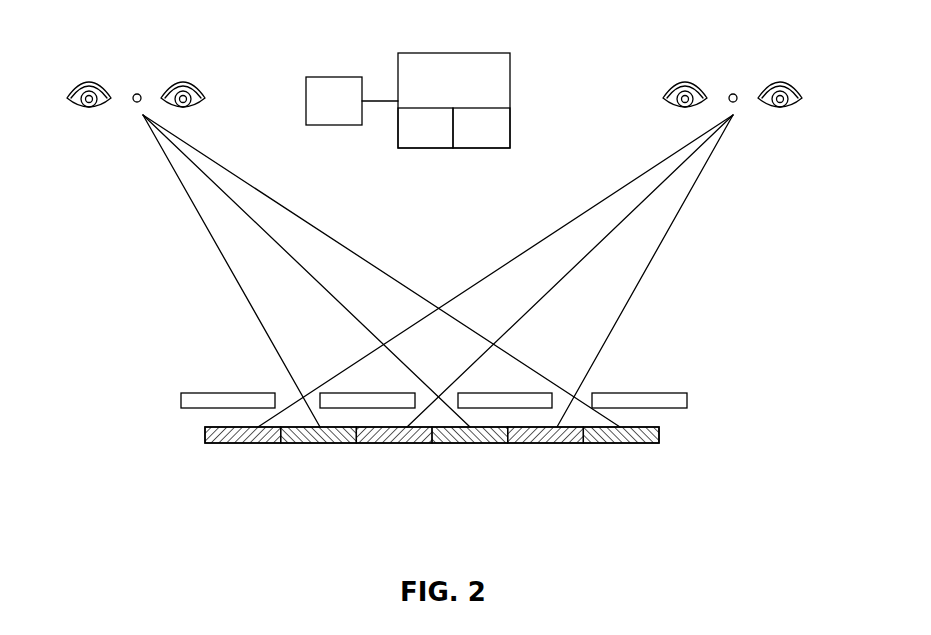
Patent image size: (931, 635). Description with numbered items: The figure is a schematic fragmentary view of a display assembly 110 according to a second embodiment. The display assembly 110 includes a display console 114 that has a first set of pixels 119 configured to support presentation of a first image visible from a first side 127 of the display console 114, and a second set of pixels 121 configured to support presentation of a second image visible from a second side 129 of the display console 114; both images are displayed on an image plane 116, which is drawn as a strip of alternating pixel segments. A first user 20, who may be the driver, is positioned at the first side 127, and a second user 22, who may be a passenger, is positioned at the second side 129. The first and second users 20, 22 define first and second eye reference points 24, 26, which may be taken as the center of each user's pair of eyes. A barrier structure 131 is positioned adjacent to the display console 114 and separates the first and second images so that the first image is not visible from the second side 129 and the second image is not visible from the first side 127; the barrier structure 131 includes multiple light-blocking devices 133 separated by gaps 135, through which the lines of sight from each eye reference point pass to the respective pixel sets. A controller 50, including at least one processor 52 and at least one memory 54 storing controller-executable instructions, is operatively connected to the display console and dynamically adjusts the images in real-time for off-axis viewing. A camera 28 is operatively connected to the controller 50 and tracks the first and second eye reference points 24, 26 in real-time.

The first user 20 is at (112, 49).
The second user 22 is at (764, 49).
The first eye reference point 24 is at (137, 93).
The second eye reference point 26 is at (733, 93).
The camera 28 is at (318, 77).
The controller 50 is at (420, 53).
The processor 52 is at (398, 135).
The memory 54 is at (510, 135).
The display assembly 110 is at (166, 349).
The display console 114 is at (166, 416).
The image plane 116 is at (205, 437).
The first set of pixels 119 is at (222, 446).
The second set of pixels 121 is at (299, 446).
The first side 127 is at (90, 131).
The second side 129 is at (781, 131).
The barrier structure 131 is at (689, 365).
The light-blocking devices 133 is at (335, 395).
The gaps 135 is at (290, 395).